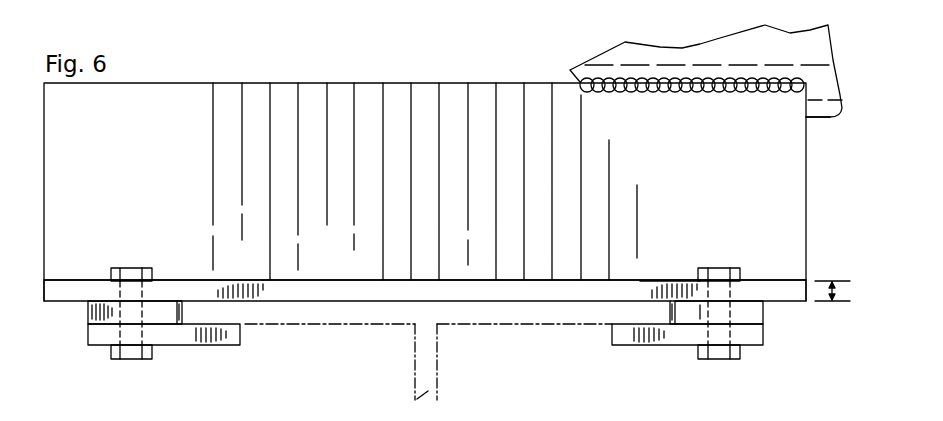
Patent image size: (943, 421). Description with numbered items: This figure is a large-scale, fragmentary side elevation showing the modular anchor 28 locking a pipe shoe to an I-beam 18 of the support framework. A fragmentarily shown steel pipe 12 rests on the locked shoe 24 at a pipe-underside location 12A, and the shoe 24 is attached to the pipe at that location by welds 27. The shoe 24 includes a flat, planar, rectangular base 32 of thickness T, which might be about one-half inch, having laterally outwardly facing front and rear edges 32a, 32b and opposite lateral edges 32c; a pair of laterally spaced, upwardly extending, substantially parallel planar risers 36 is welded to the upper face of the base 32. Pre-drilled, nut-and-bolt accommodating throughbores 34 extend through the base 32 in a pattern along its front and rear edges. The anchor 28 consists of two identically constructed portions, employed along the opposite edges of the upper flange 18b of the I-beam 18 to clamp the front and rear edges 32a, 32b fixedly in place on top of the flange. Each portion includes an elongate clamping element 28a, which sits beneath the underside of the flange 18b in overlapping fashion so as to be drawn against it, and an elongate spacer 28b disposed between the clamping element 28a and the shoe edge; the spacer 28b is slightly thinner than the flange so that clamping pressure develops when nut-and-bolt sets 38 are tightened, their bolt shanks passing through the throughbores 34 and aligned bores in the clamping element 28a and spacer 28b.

The pipe 12 is at (621, 48).
The pipe-underside location 12A is at (816, 127).
The I-beam 18 is at (442, 368).
The upper flange 18b is at (375, 326).
The locked shoe 24 is at (316, 80).
The weld 27 is at (678, 97).
The anchor 28 is at (428, 347).
The clamping element 28a is at (100, 340).
The spacer 28b is at (88, 312).
The base 32 is at (90, 276).
The front edge 32a is at (808, 290).
The rear edge 32b is at (90, 260).
The lateral edge 32c is at (680, 262).
The throughbore 34 is at (125, 315).
The riser 36 is at (130, 141).
The nut-and-bolt set 38 is at (134, 266).
The thickness T is at (845, 289).